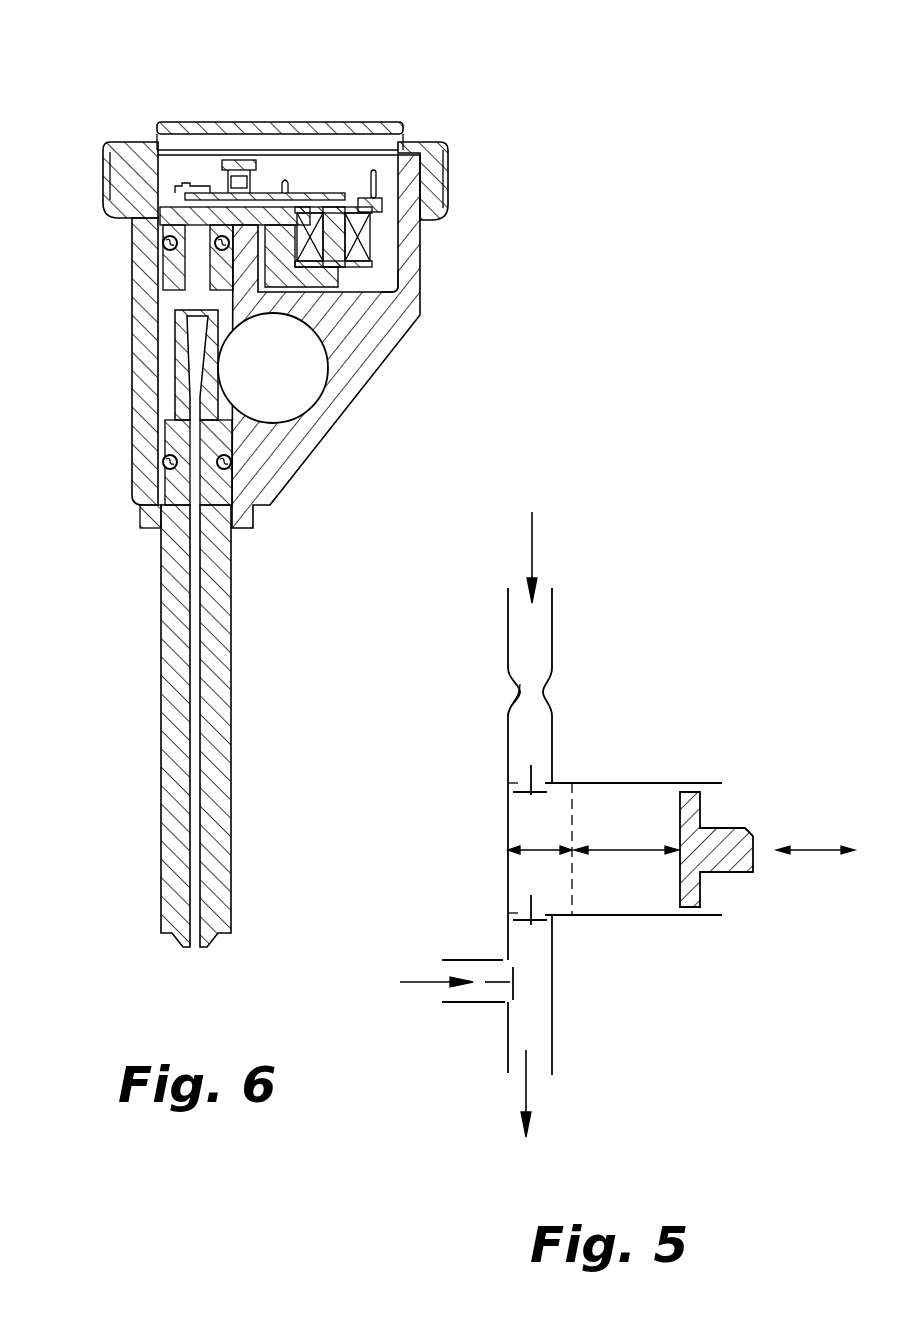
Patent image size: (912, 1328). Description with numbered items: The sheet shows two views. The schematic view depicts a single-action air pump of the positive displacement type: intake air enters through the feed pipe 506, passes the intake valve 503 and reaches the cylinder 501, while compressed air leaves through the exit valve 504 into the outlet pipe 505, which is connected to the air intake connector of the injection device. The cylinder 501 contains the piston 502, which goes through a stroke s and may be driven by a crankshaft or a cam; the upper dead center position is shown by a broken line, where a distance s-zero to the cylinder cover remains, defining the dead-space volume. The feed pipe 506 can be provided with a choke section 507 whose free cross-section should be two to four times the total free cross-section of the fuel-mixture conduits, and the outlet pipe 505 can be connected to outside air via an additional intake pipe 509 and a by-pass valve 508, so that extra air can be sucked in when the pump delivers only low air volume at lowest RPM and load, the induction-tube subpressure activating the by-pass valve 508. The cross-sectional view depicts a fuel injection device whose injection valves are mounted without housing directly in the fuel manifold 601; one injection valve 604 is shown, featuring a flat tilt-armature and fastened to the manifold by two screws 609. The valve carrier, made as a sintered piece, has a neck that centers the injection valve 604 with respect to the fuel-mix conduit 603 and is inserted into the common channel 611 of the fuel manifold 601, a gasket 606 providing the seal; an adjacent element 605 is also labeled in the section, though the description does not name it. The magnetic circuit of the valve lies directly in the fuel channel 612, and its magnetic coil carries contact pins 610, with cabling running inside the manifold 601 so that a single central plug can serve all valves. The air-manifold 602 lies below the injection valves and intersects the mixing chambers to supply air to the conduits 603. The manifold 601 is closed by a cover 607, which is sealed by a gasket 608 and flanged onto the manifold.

In FIG. 5, the cylinder 501 is at (662, 783).
In FIG. 5, the piston 502 is at (708, 878).
In FIG. 5, the intake valve 503 is at (523, 795).
In FIG. 5, the exit valve 504 is at (505, 930).
In FIG. 5, the outlet pipe 505 is at (503, 1060).
In FIG. 5, the feed pipe 506 is at (510, 632).
In FIG. 5, the choke section 507 is at (546, 692).
In FIG. 5, the by-pass valve 508 is at (513, 992).
In FIG. 5, the additional intake pipe 509 is at (463, 1005).
In FIG. 6, the fuel manifold 601 is at (368, 345).
In FIG. 6, the air-manifold 602 is at (307, 390).
In FIG. 6, the fuel-mix conduit 603 is at (220, 634).
In FIG. 6, the injection valve 604 is at (292, 194).
In FIG. 6, the sleeve block 605 is at (163, 228).
In FIG. 6, the gasket 606 is at (158, 268).
In FIG. 6, the cover 607 is at (192, 122).
In FIG. 6, the gasket 608 is at (378, 180).
In FIG. 6, the screws 609 is at (177, 197).
In FIG. 6, the contact pins 610 is at (390, 190).
In FIG. 6, the common channel 611 is at (158, 382).
In FIG. 6, the fuel channel 612 is at (392, 288).